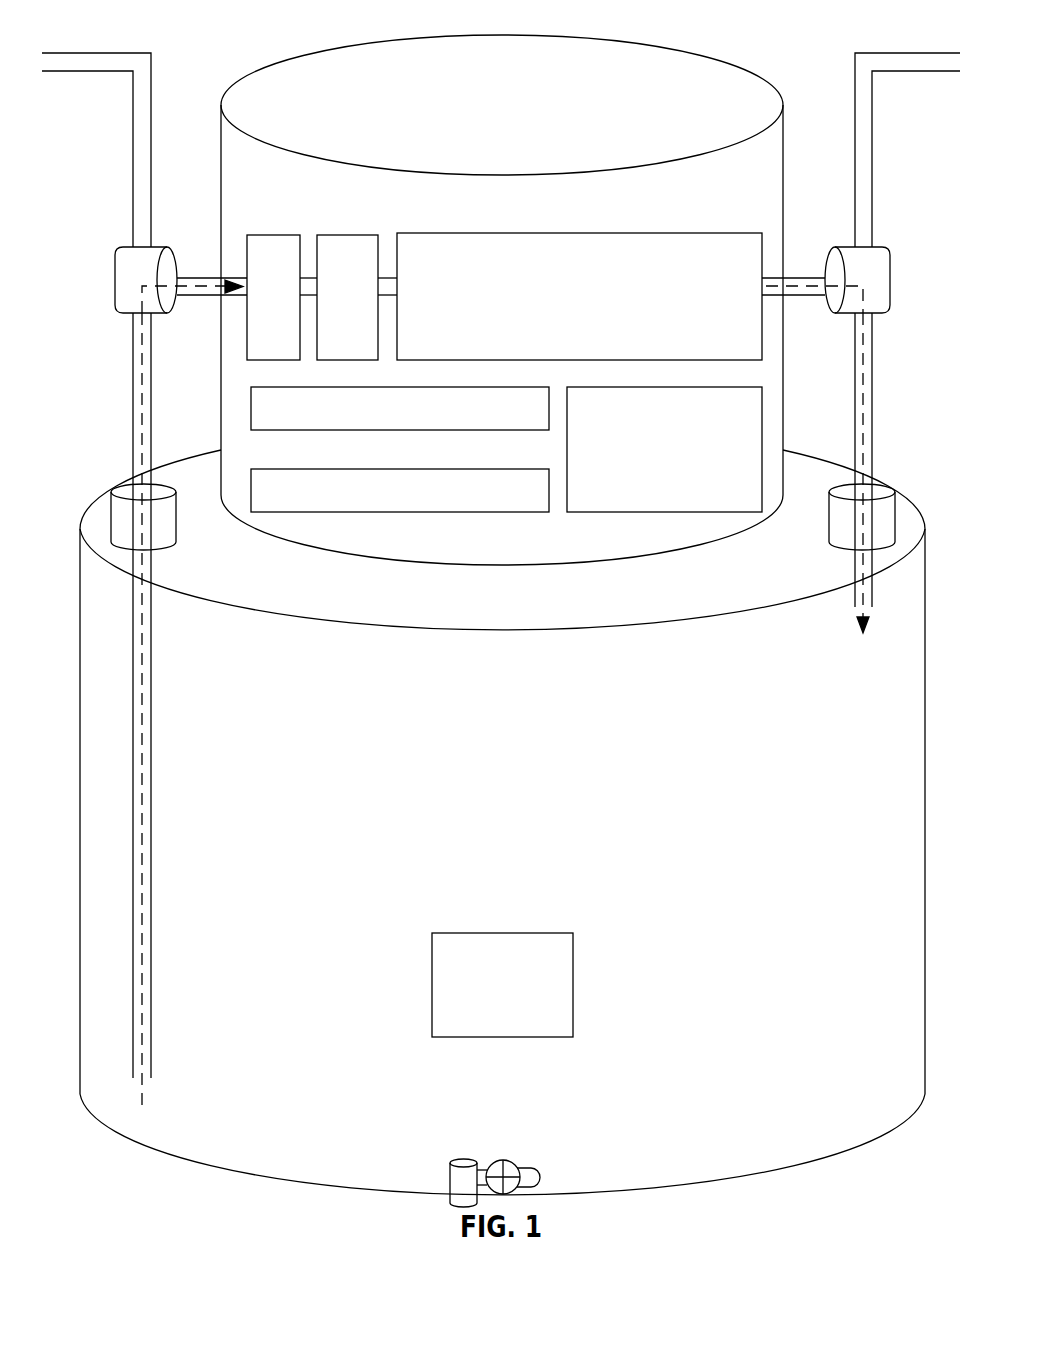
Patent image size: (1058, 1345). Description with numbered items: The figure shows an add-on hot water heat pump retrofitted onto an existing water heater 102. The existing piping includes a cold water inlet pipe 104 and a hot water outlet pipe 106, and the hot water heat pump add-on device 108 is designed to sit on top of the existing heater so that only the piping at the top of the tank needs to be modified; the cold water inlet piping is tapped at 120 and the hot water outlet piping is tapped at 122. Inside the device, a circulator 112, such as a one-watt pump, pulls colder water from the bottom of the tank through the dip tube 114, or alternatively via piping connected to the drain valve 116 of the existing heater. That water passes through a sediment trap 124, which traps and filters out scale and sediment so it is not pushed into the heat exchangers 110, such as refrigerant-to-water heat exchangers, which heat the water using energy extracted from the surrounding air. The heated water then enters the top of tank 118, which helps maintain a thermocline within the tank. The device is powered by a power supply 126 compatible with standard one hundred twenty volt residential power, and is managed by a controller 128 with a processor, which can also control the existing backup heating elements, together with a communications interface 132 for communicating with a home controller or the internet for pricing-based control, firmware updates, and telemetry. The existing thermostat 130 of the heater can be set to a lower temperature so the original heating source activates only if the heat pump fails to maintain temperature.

The existing water heater 102 is at (825, 1158).
The cold water inlet pipe 104 is at (96, 150).
The hot water outlet pipe 106 is at (907, 150).
The hot water heat pump add-on device 108 is at (715, 60).
The heat exchangers 110 is at (579, 296).
The circulator 112 is at (275, 235).
The dip tube 114 is at (151, 808).
The drain valve 116 is at (510, 1158).
The top of tank 118 is at (863, 640).
The cold water inlet piping tap 120 is at (112, 278).
The hot water outlet piping tap 122 is at (892, 278).
The sediment trap 124 is at (358, 235).
The power supply 126 is at (598, 512).
The controller 128 is at (400, 512).
The existing thermostat 130 is at (573, 972).
The communications interface 132 is at (400, 430).